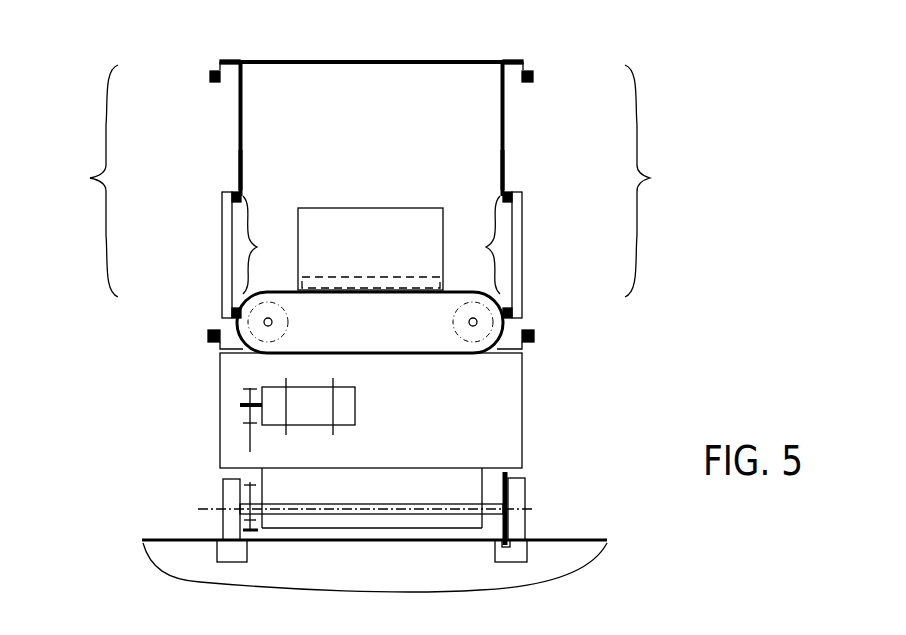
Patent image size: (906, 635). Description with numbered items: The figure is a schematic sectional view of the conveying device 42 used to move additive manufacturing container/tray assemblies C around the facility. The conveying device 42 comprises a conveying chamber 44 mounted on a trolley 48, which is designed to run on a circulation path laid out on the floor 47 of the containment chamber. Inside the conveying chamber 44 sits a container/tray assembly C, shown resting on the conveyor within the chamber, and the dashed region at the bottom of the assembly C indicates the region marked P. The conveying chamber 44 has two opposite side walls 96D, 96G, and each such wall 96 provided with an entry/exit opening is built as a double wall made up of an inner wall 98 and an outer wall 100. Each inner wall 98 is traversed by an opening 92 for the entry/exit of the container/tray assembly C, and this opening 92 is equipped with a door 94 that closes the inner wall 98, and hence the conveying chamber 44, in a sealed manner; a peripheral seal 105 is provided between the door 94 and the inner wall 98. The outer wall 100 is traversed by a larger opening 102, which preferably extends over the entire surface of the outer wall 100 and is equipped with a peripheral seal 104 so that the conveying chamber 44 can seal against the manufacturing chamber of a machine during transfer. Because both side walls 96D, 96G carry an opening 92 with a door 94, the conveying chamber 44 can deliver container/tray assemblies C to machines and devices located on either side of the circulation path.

The conveying device 42 is at (135, 386).
The conveying chamber 44 is at (436, 54).
The floor 47 is at (382, 584).
The trolley 48 is at (533, 388).
The opening 92 is at (371, 245).
The door 94 is at (226, 258).
The wall 96 is at (372, 129).
The side wall 96G is at (252, 98).
The side wall 96D is at (492, 129).
The inner wall 98 is at (243, 168).
The outer wall 100 is at (220, 63).
The opening 102 is at (373, 181).
The peripheral seal 104 is at (210, 77).
The peripheral seal 105 is at (234, 193).
The additive manufacturing container/tray assembly C is at (376, 208).
The product P is at (433, 284).